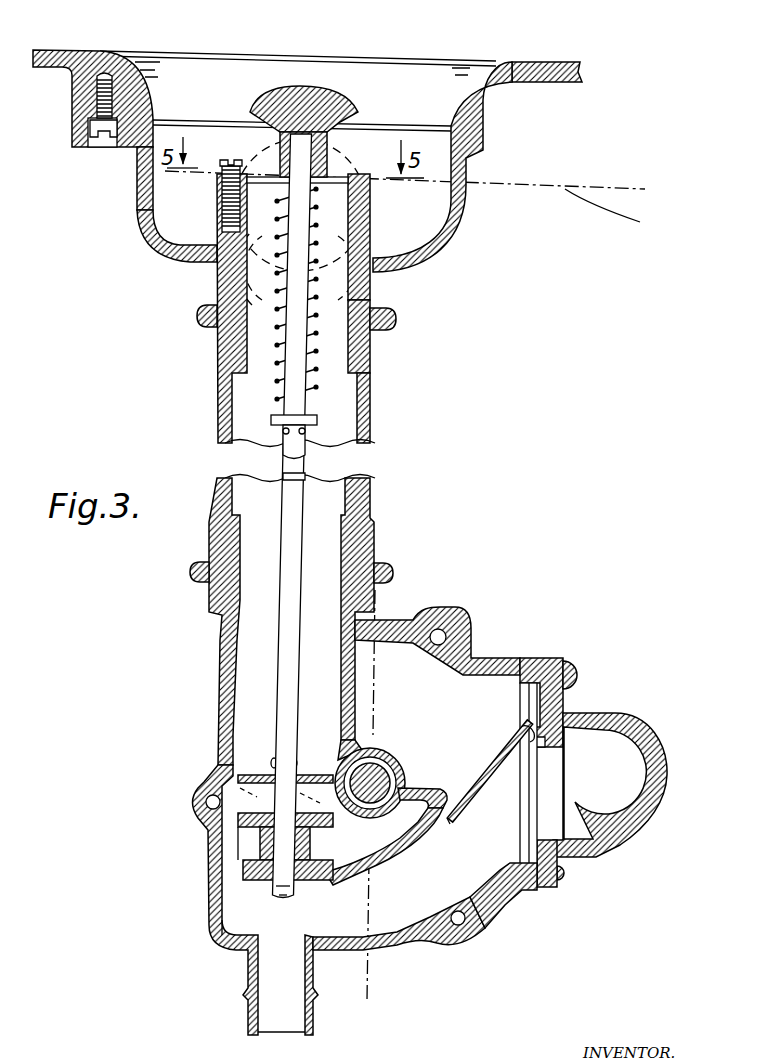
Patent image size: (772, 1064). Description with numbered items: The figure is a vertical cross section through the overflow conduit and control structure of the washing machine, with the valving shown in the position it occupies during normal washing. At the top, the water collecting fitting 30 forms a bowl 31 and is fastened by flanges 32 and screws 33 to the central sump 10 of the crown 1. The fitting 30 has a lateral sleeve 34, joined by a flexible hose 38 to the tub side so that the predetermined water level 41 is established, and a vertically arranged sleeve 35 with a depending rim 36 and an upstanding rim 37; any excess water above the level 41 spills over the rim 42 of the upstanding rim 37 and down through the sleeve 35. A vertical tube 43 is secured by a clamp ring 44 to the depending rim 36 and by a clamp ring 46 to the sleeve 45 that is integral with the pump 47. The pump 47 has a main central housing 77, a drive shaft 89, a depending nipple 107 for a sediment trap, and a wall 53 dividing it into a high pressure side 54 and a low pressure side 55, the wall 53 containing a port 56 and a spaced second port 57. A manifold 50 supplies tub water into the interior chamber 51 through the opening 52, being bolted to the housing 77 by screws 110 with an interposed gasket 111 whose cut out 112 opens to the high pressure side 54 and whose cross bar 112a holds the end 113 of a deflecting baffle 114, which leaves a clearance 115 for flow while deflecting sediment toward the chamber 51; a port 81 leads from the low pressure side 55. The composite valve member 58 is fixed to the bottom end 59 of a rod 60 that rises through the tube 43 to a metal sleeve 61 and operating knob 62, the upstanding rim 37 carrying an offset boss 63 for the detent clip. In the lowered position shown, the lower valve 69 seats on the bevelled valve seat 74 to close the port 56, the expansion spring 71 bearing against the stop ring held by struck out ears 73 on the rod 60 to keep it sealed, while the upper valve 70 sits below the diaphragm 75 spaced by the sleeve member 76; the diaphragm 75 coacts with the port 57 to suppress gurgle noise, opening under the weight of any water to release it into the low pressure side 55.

The crown 1 is at (541, 60).
The central sump 10 is at (440, 78).
The water collecting fitting 30 is at (185, 243).
The bowl 31 is at (160, 207).
The flanges 32 is at (75, 150).
The screws 33 is at (75, 100).
The lateral sleeve 34 is at (262, 155).
The vertically arranged sleeve 35 is at (372, 283).
The depending rim 36 is at (372, 352).
The upstanding rim 37 is at (370, 210).
The flexible hose 38 is at (210, 288).
The water level 41 is at (618, 215).
The rim 42 is at (350, 177).
The tube 43 is at (370, 478).
The clamp ring 44 is at (398, 320).
The sleeve 45 is at (376, 542).
The clamp ring 46 is at (195, 580).
The pump 47 is at (474, 633).
The manifold 50 is at (665, 800).
The interior chamber 51 is at (505, 892).
The opening 52 is at (580, 855).
The wall 53 is at (385, 864).
The high pressure side 54 is at (420, 940).
The low pressure side 55 is at (440, 795).
The port 56 is at (272, 893).
The second port 57 is at (238, 784).
The composite valve member 58 is at (236, 848).
The bottom end 59 is at (279, 897).
The rod 60 is at (290, 593).
The metal sleeve 61 is at (328, 152).
The operating knob 62 is at (305, 85).
The offset boss 63 is at (232, 195).
The lower valve 69 is at (235, 866).
The upper valve 70 is at (210, 826).
The expansion spring 71 is at (275, 290).
The struck out ears 73 is at (280, 428).
The valve seat 74 is at (336, 888).
The diaphragm 75 is at (253, 777).
The sleeve member 76 is at (200, 803).
The main central housing 77 is at (505, 657).
The port 81 is at (312, 855).
The drive shaft 89 is at (378, 765).
The depending nipple 107 is at (250, 1015).
The screws 110 is at (575, 670).
The gasket 111 is at (540, 890).
The cut out 112 is at (538, 795).
The cross bar 112a is at (520, 735).
The end 113 is at (546, 732).
The deflecting baffle 114 is at (478, 785).
The clearance 115 is at (446, 826).